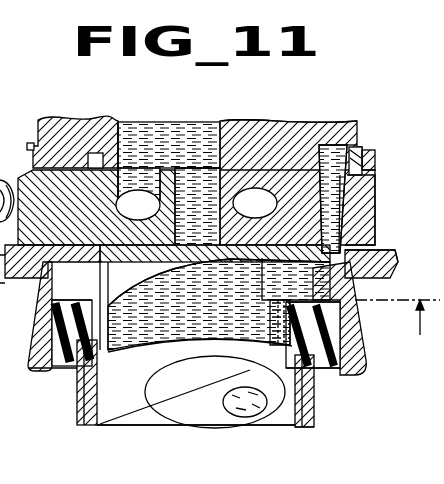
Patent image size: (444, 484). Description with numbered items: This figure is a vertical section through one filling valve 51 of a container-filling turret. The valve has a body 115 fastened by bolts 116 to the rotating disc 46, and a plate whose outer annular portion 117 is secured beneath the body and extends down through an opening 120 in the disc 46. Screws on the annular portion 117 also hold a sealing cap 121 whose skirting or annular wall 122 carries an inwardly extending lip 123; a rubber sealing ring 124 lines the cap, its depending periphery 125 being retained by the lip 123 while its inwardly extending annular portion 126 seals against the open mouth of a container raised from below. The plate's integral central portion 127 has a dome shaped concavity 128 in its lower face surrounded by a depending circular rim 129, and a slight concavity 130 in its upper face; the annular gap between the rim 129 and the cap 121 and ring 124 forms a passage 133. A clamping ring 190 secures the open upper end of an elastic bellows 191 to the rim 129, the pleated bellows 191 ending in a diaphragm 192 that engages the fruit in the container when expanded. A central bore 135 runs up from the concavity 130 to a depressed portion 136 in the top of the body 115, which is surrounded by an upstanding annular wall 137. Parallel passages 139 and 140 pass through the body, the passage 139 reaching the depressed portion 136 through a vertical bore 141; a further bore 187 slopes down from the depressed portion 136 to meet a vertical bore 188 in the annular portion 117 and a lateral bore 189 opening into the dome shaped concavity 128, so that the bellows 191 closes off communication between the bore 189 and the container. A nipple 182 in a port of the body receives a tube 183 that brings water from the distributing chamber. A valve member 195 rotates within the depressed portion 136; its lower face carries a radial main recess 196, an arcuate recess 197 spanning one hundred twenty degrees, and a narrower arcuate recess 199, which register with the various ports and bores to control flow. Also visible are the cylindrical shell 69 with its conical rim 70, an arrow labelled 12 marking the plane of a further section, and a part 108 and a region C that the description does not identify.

The tube 183 is at (2, 95).
The nipple 182 is at (15, 148).
The valve member 195 is at (80, 130).
The narrower arcuate recess 199 is at (98, 152).
The passage 139 is at (127, 125).
The vertical bore 141 is at (152, 175).
The main recess 196 is at (193, 125).
The filling valve 51 is at (292, 150).
The central bore 135 is at (240, 156).
The passage 140 is at (302, 163).
The arcuate recess 197 is at (336, 147).
The depressed portion 136 is at (360, 152).
The upstanding annular wall 137 is at (368, 163).
The bore 187 is at (340, 190).
The body 115 is at (365, 213).
The vertical bore 188 is at (396, 255).
The disc 46 is at (392, 277).
The outer annular portion 117 is at (355, 296).
The rubber sealing ring 124 is at (350, 318).
The dimension 12 is at (399, 332).
The sealing cap 121 is at (367, 366).
The depending periphery 125 is at (338, 365).
The cylindrical shell 69 is at (312, 415).
The outlet 108 is at (296, 420).
The chamber C is at (292, 428).
The diaphragm 192 is at (205, 343).
The inwardly extending lip 123 is at (48, 366).
The conical rim 70 is at (70, 370).
The annular wall 122 is at (32, 368).
The passage 133 is at (42, 290).
The opening 120 is at (44, 284).
The dome shaped concavity 128 is at (133, 268).
The central portion 127 is at (194, 262).
The bolts 116 is at (146, 274).
The inwardly extending annular portion 126 is at (158, 312).
The bellows 191 is at (125, 330).
The lateral bore 189 is at (275, 302).
The circular rim 129 is at (282, 320).
The clamping ring 190 is at (275, 343).
The slight concavity 130 is at (201, 258).